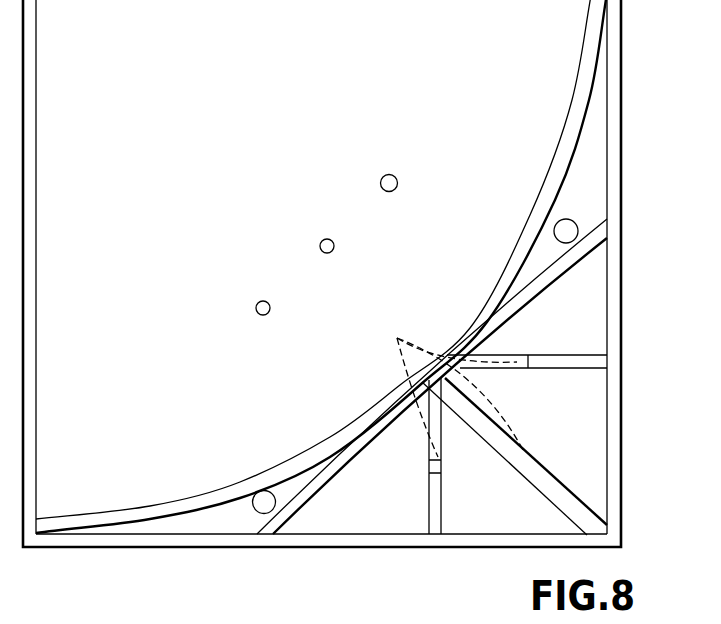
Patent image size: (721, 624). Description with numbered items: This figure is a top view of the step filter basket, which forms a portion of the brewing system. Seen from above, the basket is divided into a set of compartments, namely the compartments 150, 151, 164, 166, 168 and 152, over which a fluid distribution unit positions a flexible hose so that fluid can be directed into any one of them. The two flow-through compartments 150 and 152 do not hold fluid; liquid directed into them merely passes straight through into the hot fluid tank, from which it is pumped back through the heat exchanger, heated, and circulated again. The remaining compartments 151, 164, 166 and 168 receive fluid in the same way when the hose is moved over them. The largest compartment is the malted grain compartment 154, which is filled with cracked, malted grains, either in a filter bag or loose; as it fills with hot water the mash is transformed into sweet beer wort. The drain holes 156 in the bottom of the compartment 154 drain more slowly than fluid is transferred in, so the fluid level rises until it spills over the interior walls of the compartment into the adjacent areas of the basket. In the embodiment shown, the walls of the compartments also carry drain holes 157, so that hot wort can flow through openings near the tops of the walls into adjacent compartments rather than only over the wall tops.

The flow-through compartment 150 is at (194, 523).
The compartment 151 is at (365, 520).
The flow-through compartment 152 is at (587, 172).
The malted grain compartment 154 is at (184, 214).
The drain holes 156 is at (255, 512).
The drain holes 157 is at (432, 376).
The compartment 164 is at (483, 518).
The compartment 166 is at (583, 423).
The compartment 168 is at (583, 330).